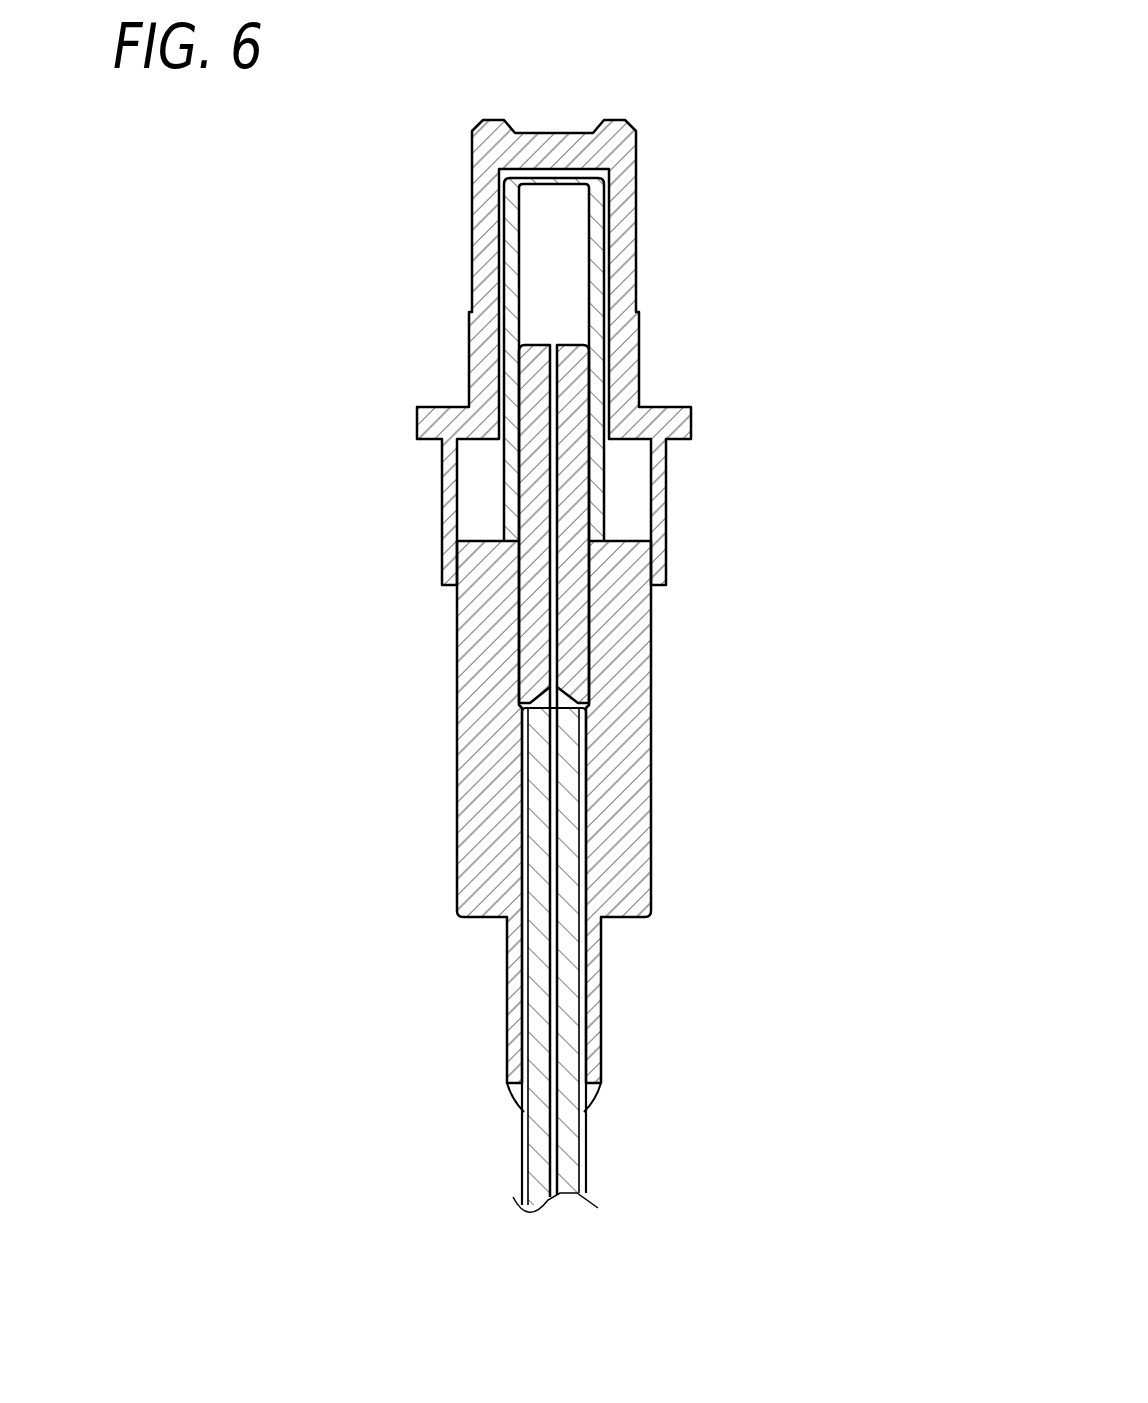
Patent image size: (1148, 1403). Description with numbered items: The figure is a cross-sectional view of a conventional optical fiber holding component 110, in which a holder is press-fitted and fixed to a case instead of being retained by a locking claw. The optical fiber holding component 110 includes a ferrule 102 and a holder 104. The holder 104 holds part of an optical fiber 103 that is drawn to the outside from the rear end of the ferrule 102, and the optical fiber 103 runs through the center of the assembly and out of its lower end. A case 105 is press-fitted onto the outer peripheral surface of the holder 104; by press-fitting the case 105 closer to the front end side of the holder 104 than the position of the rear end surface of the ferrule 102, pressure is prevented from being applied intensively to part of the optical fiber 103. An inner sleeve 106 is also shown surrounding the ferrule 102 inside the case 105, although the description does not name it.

The ferrule 102 is at (577, 635).
The optical fiber 103 is at (560, 822).
The holder 104 is at (497, 803).
The case 105 is at (483, 427).
The inner sleeve 106 is at (512, 203).
The optical fiber holding component 110 is at (337, 1015).